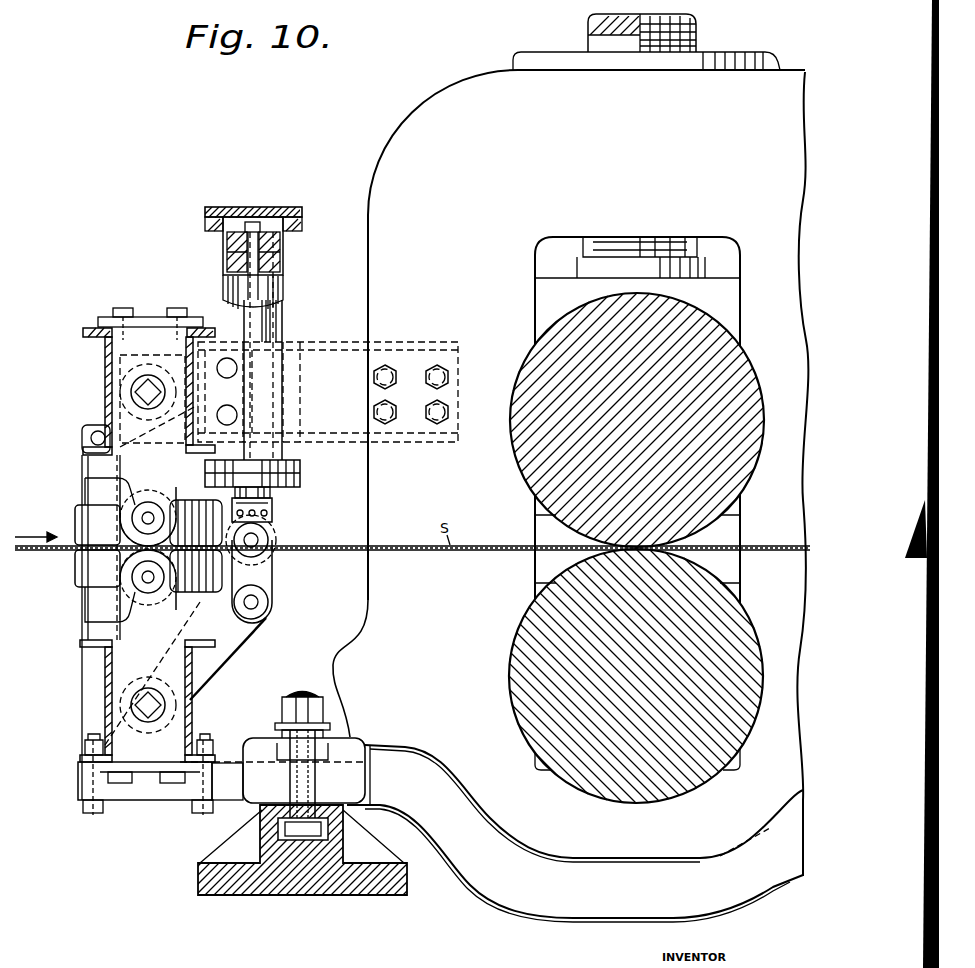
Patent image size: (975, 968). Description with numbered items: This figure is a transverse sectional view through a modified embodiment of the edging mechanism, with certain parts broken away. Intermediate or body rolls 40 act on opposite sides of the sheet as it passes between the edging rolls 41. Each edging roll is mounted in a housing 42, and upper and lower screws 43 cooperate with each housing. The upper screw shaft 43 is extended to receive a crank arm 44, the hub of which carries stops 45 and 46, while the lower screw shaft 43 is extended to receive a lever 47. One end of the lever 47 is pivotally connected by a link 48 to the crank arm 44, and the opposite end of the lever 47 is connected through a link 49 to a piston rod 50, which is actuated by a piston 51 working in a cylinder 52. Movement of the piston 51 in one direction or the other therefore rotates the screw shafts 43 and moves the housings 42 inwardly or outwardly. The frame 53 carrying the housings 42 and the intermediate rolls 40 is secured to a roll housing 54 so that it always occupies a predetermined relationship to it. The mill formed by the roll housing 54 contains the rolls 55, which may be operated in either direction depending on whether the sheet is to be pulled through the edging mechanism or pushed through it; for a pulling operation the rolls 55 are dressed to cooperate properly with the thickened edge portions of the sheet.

The intermediate or body rolls 40 is at (120, 563).
The edging rolls 41 is at (100, 522).
The housing 42 is at (100, 488).
The screw shaft 43 is at (132, 388).
The crank arm 44 is at (100, 431).
The stop 45 is at (192, 423).
The stop 46 is at (130, 362).
The lever 47 is at (237, 642).
The link 48 is at (92, 690).
The link 49 is at (272, 583).
The piston rod 50 is at (262, 527).
The piston 51 is at (226, 255).
The cylinder 52 is at (270, 317).
The frame 53 is at (108, 368).
The roll housing 54 is at (408, 151).
The rolls 55 is at (537, 472).